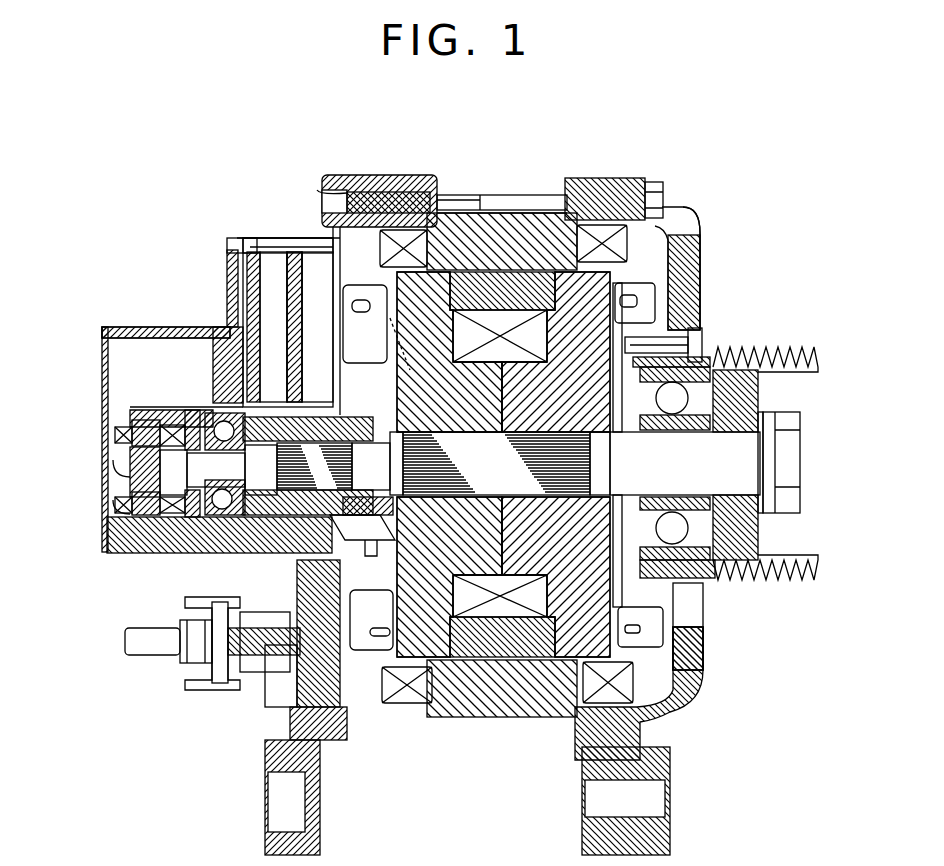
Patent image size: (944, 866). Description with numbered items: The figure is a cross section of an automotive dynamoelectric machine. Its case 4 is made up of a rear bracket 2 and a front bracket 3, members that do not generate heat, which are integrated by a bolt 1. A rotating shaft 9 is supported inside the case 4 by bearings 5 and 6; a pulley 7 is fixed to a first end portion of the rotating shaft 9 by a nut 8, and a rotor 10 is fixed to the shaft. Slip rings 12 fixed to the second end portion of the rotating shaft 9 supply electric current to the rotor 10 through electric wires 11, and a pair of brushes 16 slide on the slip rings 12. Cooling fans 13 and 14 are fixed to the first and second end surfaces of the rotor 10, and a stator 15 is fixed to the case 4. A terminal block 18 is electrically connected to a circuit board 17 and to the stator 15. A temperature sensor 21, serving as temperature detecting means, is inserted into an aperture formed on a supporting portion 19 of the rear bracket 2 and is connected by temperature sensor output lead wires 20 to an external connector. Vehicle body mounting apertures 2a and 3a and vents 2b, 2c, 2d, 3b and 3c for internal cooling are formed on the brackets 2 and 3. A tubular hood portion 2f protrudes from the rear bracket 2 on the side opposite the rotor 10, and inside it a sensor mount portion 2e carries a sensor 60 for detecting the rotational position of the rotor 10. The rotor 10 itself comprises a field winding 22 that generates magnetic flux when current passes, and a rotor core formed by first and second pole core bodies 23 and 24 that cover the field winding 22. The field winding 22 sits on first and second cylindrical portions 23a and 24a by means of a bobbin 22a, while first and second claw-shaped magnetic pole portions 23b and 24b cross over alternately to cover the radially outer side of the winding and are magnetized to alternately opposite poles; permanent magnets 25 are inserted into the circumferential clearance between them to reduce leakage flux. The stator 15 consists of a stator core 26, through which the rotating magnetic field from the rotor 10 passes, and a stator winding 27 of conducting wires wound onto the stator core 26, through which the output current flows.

The bolt 1 is at (663, 202).
The rear bracket 2 is at (341, 213).
The vehicle body mounting aperture 2a is at (277, 828).
The vent 2b is at (267, 550).
The vent 2c is at (227, 283).
The vent 2d is at (340, 700).
The sensor mount portion 2e is at (160, 418).
The tubular hood portion 2f is at (167, 329).
The front bracket 3 is at (683, 210).
The vehicle body mounting aperture 3a is at (643, 817).
The vent 3b is at (697, 632).
The vent 3c is at (700, 283).
The case 4 is at (700, 240).
The bearing 5 is at (210, 400).
The bearing 6 is at (723, 350).
The pulley 7 is at (798, 562).
The nut 8 is at (790, 422).
The rotating shaft 9 is at (723, 456).
The rotor 10 is at (565, 650).
The electric wires 11 is at (360, 300).
The slip rings 12 is at (273, 540).
The cooling fan 13 is at (323, 198).
The cooling fan 14 is at (643, 297).
The stator 15 is at (502, 228).
The brushes 16 is at (320, 283).
The circuit board 17 is at (280, 700).
The terminal block 18 is at (148, 645).
The supporting portion 19 is at (317, 190).
The temperature sensor output lead wires 20 is at (283, 187).
The temperature sensor 21 is at (413, 198).
The field winding 22 is at (503, 603).
The bobbin 22a is at (447, 232).
The first pole core body 23 is at (370, 612).
The first cylindrical portion 23a is at (427, 590).
The first claw-shaped magnetic pole portion 23b is at (433, 617).
The second pole core body 24 is at (600, 660).
The second cylindrical portion 24a is at (585, 560).
The second claw-shaped magnetic pole portion 24b is at (510, 650).
The permanent magnets 25 is at (520, 282).
The stator core 26 is at (545, 240).
The stator winding 27 is at (378, 176).
The sensor 60 is at (110, 435).